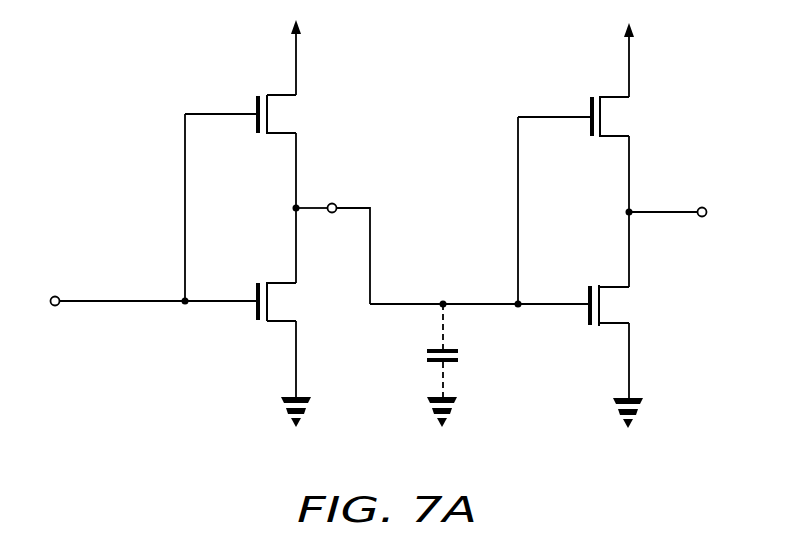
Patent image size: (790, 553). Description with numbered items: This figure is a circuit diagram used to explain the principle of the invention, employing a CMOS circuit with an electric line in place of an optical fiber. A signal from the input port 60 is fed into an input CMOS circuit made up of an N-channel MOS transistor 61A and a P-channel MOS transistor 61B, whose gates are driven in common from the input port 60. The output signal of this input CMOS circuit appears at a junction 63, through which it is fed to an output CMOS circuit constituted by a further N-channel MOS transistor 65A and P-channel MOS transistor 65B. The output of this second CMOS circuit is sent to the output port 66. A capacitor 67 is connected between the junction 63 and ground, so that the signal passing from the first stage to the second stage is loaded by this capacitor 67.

The input port 60 is at (57, 296).
The N-channel MOS transistor 61A is at (256, 100).
The P-channel MOS transistor 61B is at (256, 322).
The junction 63 is at (352, 206).
The N-channel MOS transistor 65A is at (590, 103).
The P-channel MOS transistor 65B is at (588, 322).
The output port 66 is at (705, 207).
The capacitor 67 is at (428, 362).